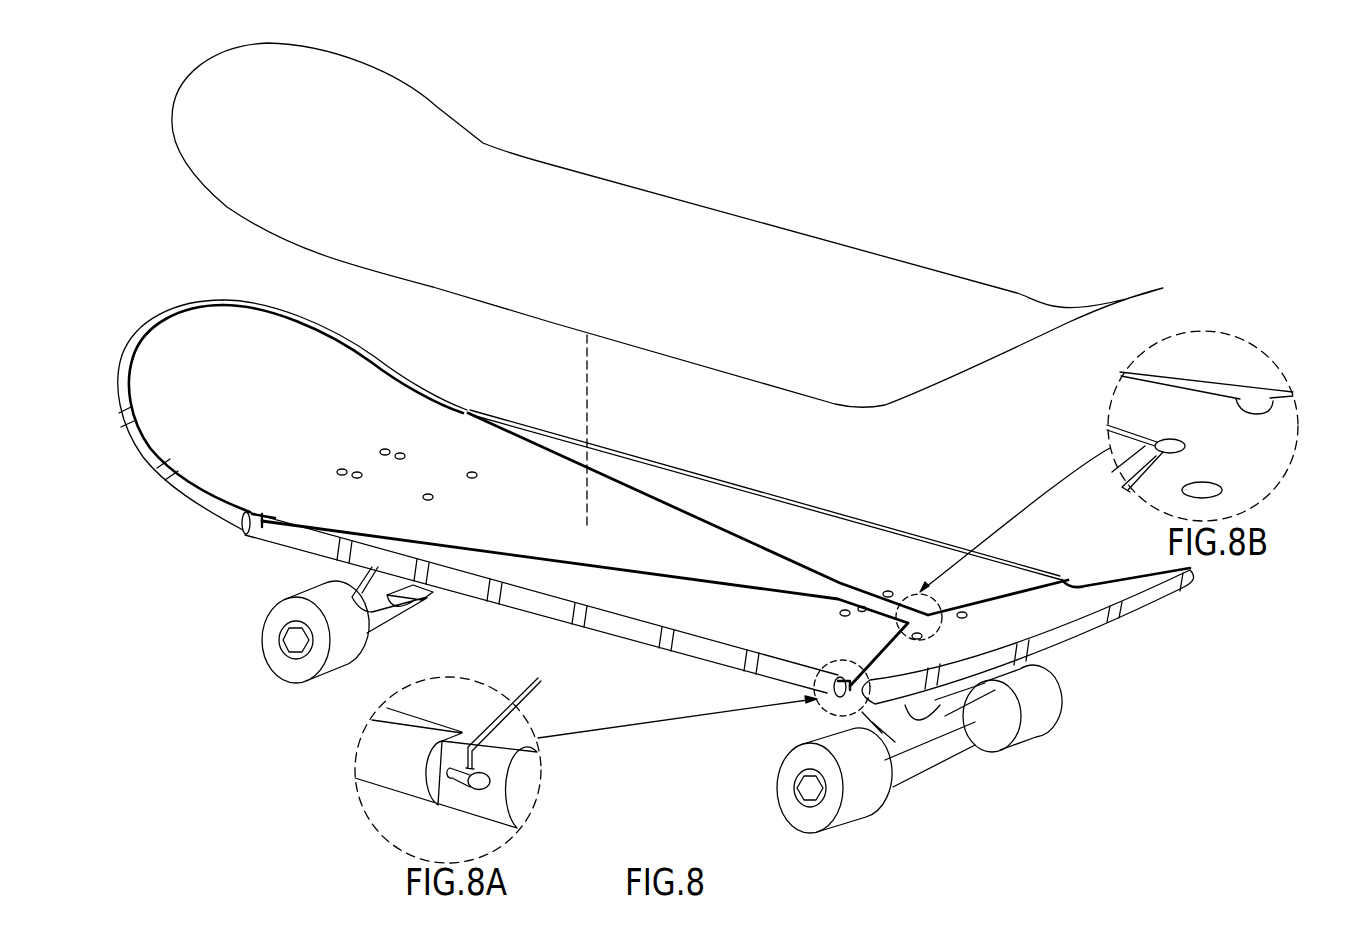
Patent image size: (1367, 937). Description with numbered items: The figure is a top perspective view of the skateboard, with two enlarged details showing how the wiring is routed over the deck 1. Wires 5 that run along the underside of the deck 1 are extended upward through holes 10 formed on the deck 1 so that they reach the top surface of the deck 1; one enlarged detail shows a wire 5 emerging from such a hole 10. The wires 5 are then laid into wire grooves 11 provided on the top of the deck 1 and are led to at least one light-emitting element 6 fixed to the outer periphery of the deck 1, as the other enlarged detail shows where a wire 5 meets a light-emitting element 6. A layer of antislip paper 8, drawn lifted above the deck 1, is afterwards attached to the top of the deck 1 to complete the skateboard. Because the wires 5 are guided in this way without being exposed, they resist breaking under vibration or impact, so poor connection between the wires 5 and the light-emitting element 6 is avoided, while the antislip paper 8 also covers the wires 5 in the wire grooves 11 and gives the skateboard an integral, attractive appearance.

In FIG. 8, the deck 1 is at (718, 502).
In FIG. 8, the antislip paper 8 is at (780, 263).
In FIG. 8A, the wires 5 is at (536, 681).
In FIG. 8B, the wires 5 is at (1130, 487).
In FIG. 8A, the light-emitting element 6 is at (492, 781).
In FIG. 8B, the holes 10 is at (1185, 444).
In FIG. 8B, the wire grooves 11 is at (1110, 452).